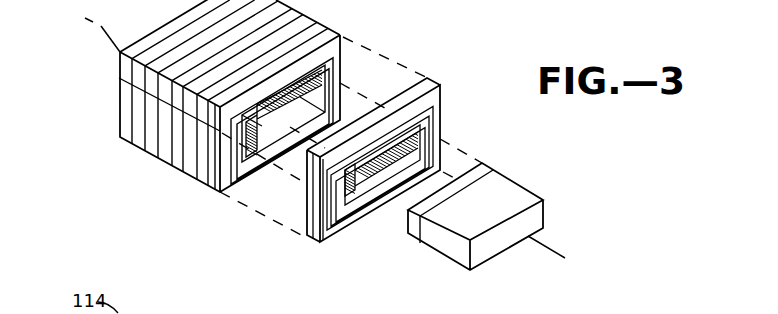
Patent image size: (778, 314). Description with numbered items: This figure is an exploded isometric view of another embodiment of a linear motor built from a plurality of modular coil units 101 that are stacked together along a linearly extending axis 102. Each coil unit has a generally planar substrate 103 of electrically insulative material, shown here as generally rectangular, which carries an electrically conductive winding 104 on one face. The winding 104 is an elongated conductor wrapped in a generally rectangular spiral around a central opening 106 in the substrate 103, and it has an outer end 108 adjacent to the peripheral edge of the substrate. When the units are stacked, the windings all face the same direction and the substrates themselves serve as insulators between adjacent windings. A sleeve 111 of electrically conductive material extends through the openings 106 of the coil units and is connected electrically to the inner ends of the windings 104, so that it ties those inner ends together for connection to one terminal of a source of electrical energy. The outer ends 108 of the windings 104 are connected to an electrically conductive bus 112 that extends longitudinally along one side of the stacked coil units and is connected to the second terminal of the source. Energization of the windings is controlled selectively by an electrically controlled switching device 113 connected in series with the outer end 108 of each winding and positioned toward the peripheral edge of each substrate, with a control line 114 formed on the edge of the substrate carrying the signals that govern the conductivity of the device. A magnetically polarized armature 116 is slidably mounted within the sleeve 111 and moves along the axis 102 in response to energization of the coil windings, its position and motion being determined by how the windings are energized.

The modular coil unit 101 is at (440, 77).
The linearly extending axis 102 is at (114, 35).
The substrate 103 is at (313, 239).
The electrically conductive winding 104 is at (441, 126).
The central opening 106 is at (360, 197).
The outer end 108 is at (214, 175).
The sleeve 111 is at (340, 85).
The electrically conductive bus 112 is at (118, 80).
The electrically controlled switching device 113 is at (314, 196).
The control line 114 is at (309, 188).
The magnetically polarized armature 116 is at (499, 185).